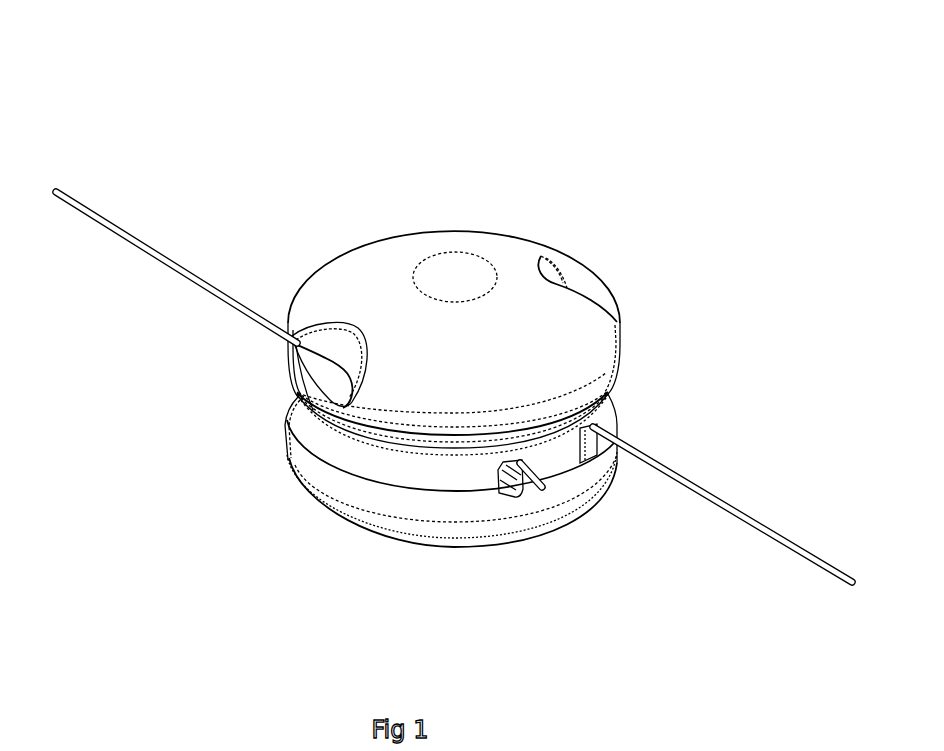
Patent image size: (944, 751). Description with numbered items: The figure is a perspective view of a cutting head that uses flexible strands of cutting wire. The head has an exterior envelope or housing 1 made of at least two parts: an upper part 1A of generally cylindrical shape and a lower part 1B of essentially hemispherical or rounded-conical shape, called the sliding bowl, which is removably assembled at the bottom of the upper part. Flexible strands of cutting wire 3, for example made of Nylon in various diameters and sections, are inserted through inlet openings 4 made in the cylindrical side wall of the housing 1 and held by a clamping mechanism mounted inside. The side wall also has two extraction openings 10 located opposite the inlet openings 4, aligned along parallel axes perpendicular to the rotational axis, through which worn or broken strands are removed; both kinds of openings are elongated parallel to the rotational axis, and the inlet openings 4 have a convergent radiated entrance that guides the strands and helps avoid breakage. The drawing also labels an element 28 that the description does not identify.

The exterior housing 1 is at (600, 176).
The upper part 1A is at (323, 458).
The lower part 1B is at (395, 275).
The cutting wire strands 3 is at (125, 232).
The inlet openings 4 is at (587, 443).
The extraction openings 10 is at (506, 497).
The line guide opening 28 is at (326, 359).